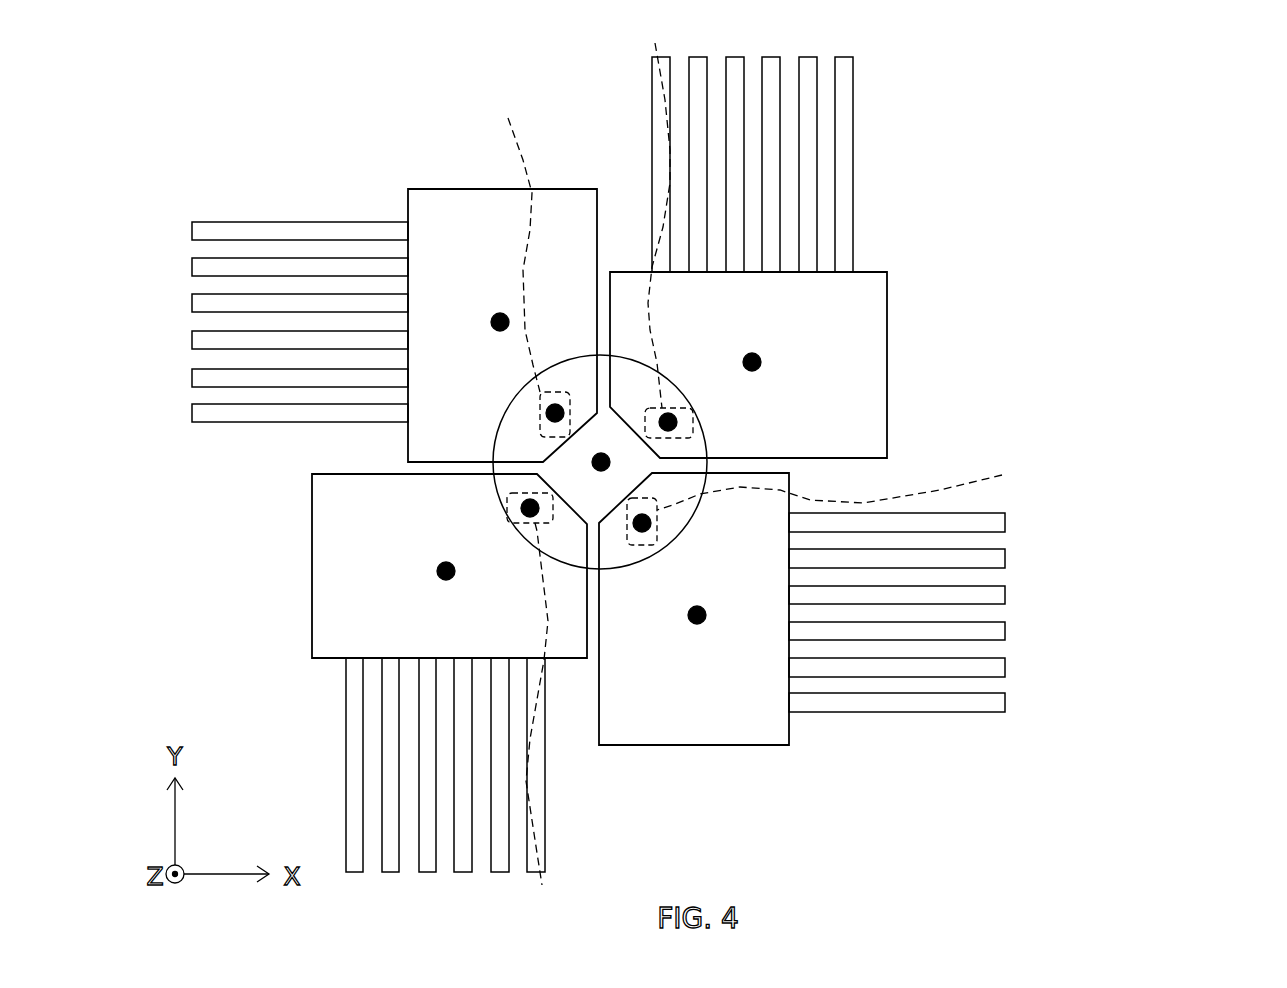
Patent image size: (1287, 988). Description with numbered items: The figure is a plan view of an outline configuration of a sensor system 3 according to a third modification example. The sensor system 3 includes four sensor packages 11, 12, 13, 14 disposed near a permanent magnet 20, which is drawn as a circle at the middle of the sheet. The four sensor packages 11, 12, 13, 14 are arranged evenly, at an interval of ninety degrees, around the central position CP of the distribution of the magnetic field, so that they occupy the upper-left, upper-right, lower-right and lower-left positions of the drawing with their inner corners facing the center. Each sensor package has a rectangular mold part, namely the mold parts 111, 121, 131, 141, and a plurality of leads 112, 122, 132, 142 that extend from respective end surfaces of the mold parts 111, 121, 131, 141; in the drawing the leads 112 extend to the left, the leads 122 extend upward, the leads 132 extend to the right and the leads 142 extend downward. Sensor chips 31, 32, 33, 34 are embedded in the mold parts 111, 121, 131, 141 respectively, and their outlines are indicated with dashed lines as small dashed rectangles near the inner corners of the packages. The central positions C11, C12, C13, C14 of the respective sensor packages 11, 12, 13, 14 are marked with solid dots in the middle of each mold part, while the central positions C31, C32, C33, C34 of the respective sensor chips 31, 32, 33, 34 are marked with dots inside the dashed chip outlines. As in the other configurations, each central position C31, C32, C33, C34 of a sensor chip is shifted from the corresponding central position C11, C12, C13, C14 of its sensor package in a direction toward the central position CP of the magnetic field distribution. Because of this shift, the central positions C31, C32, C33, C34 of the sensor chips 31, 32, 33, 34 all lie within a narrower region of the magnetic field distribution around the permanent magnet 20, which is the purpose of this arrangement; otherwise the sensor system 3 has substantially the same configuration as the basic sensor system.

The sensor system 3 is at (698, 462).
The sensor package 11 is at (389, 252).
The mold part 111 is at (441, 325).
The leads 112 is at (294, 275).
The central position of sensor package C11 is at (469, 212).
The sensor package 12 is at (825, 245).
The mold part 121 is at (823, 365).
The leads 122 is at (811, 164).
The central position of sensor package C12 is at (881, 358).
The sensor package 13 is at (868, 682).
The mold part 131 is at (700, 682).
The leads 132 is at (897, 654).
The central position of sensor package C13 is at (706, 737).
The sensor package 14 is at (360, 673).
The mold part 141 is at (389, 566).
The leads 142 is at (386, 765).
The central position of sensor package C14 is at (328, 626).
The permanent magnet 20 is at (600, 356).
The central position of the distribution of the magnetic field CP is at (590, 637).
The central position of sensor chip C31 is at (561, 271).
The central position of sensor chip C32 is at (832, 420).
The central position of sensor chip C33 is at (627, 695).
The central position of sensor chip C34 is at (372, 509).
The sensor chip 31 is at (516, 237).
The sensor chip 32 is at (653, 208).
The sensor chip 33 is at (848, 485).
The sensor chip 34 is at (543, 719).